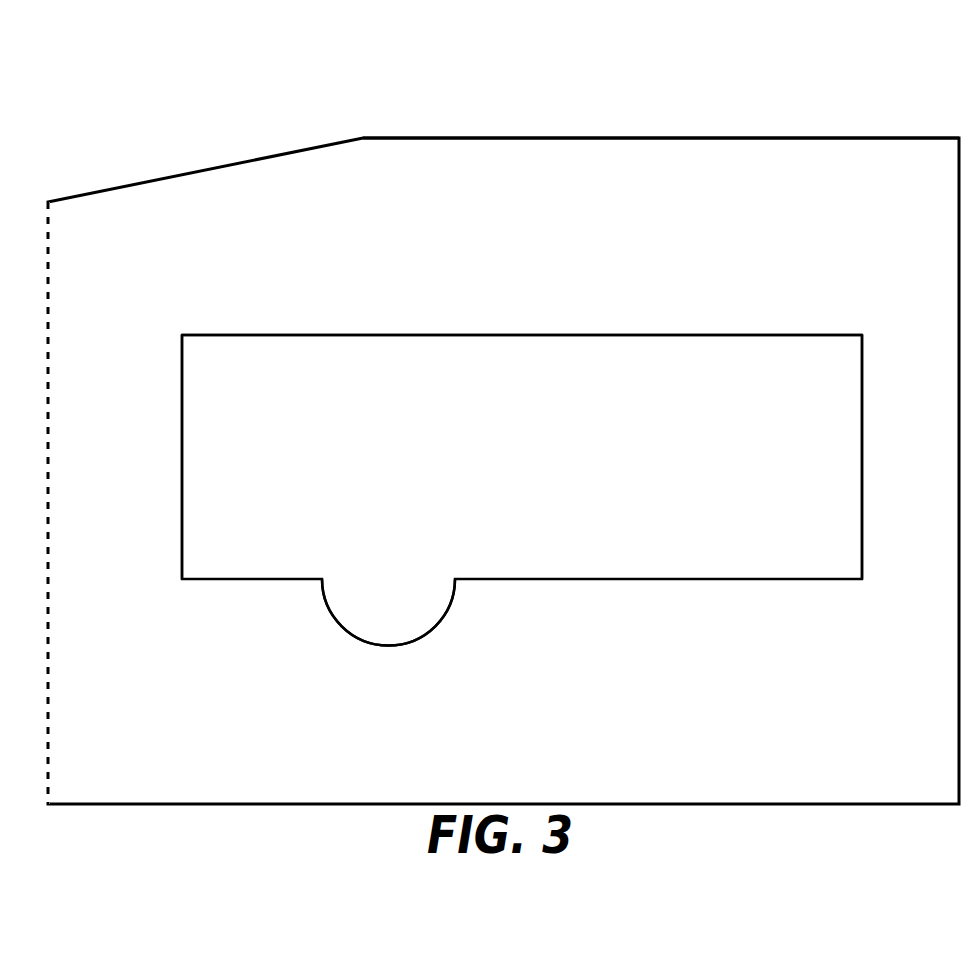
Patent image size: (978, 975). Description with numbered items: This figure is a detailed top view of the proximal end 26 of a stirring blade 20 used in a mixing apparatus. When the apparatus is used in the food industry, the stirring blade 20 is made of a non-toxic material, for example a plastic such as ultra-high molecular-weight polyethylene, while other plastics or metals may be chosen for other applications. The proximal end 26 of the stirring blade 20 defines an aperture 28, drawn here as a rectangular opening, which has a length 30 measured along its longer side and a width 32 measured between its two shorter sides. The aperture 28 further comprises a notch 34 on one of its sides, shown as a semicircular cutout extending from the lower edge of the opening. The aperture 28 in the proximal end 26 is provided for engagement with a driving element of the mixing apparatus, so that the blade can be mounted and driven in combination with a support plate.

The stirring blade 20 is at (773, 90).
The proximal end 26 is at (415, 138).
The aperture 28 is at (448, 324).
The length 30 is at (682, 335).
The width 32 is at (182, 457).
The notch 34 is at (450, 618).